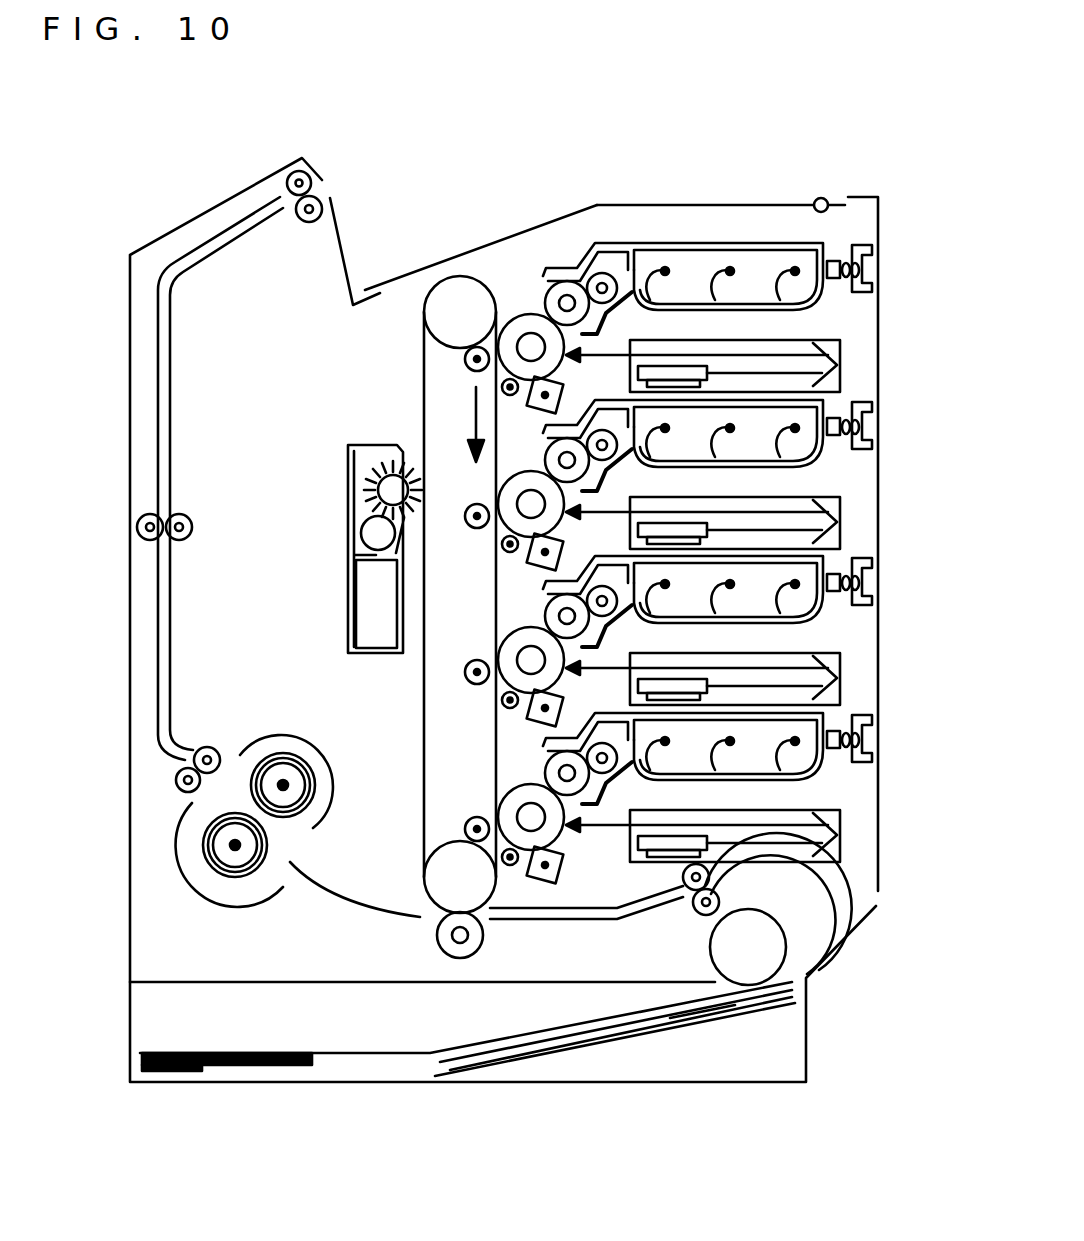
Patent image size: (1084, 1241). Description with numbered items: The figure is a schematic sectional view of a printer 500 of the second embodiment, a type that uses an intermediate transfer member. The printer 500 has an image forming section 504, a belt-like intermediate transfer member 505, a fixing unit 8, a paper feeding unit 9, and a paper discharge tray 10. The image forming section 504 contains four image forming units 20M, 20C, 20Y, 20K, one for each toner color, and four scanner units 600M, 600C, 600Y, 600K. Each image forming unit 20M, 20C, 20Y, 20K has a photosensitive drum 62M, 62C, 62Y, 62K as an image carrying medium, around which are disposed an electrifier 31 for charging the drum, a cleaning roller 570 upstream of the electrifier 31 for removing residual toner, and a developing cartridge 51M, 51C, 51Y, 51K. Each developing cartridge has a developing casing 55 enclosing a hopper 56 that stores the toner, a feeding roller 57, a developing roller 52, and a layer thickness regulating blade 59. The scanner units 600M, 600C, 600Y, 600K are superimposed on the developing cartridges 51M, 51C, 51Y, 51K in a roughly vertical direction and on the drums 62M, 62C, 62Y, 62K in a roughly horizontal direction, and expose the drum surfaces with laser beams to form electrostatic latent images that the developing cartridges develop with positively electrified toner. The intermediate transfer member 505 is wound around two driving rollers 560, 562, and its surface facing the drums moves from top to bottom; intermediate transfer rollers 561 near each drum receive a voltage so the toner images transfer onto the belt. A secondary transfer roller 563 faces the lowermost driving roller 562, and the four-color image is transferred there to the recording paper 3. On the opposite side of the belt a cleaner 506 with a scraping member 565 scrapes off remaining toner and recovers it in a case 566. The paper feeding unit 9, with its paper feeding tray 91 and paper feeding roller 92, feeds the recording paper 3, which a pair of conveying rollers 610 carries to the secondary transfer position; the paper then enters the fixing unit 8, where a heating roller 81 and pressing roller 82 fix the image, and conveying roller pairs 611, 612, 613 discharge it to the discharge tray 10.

The printer 500 is at (742, 156).
The image forming section 504 is at (789, 212).
The paper discharge tray 10 is at (483, 247).
The driving roller 560 is at (453, 305).
The intermediate transfer roller 561 is at (432, 350).
The intermediate transfer member 505 is at (426, 388).
The driving roller 562 is at (432, 895).
The secondary transfer roller 563 is at (455, 958).
The cleaning roller 570 is at (505, 905).
The pair of conveying rollers 610 is at (703, 917).
The paper feeding roller 92 is at (782, 948).
The paper feeding tray 91 is at (688, 1083).
The recording paper 3 is at (255, 1050).
The paper feeding unit 9 is at (150, 1035).
The fixing unit 8 is at (266, 742).
The heating roller 81 is at (302, 762).
The pressing roller 82 is at (252, 892).
The conveying roller pair 611 is at (175, 788).
The conveying roller pair 612 is at (137, 530).
The conveying roller pair 613 is at (300, 170).
The cleaner 506 is at (348, 455).
The scraping member 565 is at (376, 506).
The case 566 is at (376, 592).
The developing casing 55 is at (845, 704).
The hopper 56 is at (740, 767).
The feeding roller 57 is at (604, 727).
The developing roller 52 is at (552, 770).
The layer thickness regulating blade 59 is at (580, 826).
The electrifier 31 is at (550, 870).
The photosensitive drum 62M is at (528, 313).
The developing cartridge 51M is at (838, 301).
The image forming unit 20M is at (708, 328).
The scanner unit 600M is at (843, 359).
The photosensitive drum 62C is at (509, 481).
The developing cartridge 51C is at (838, 458).
The image forming unit 20C is at (692, 485).
The scanner unit 600C is at (843, 516).
The photosensitive drum 62Y is at (506, 637).
The developing cartridge 51Y is at (838, 614).
The image forming unit 20Y is at (692, 641).
The scanner unit 600Y is at (843, 672).
The photosensitive drum 62K is at (507, 795).
The developing cartridge 51K is at (838, 771).
The image forming unit 20K is at (693, 798).
The scanner unit 600K is at (843, 829).